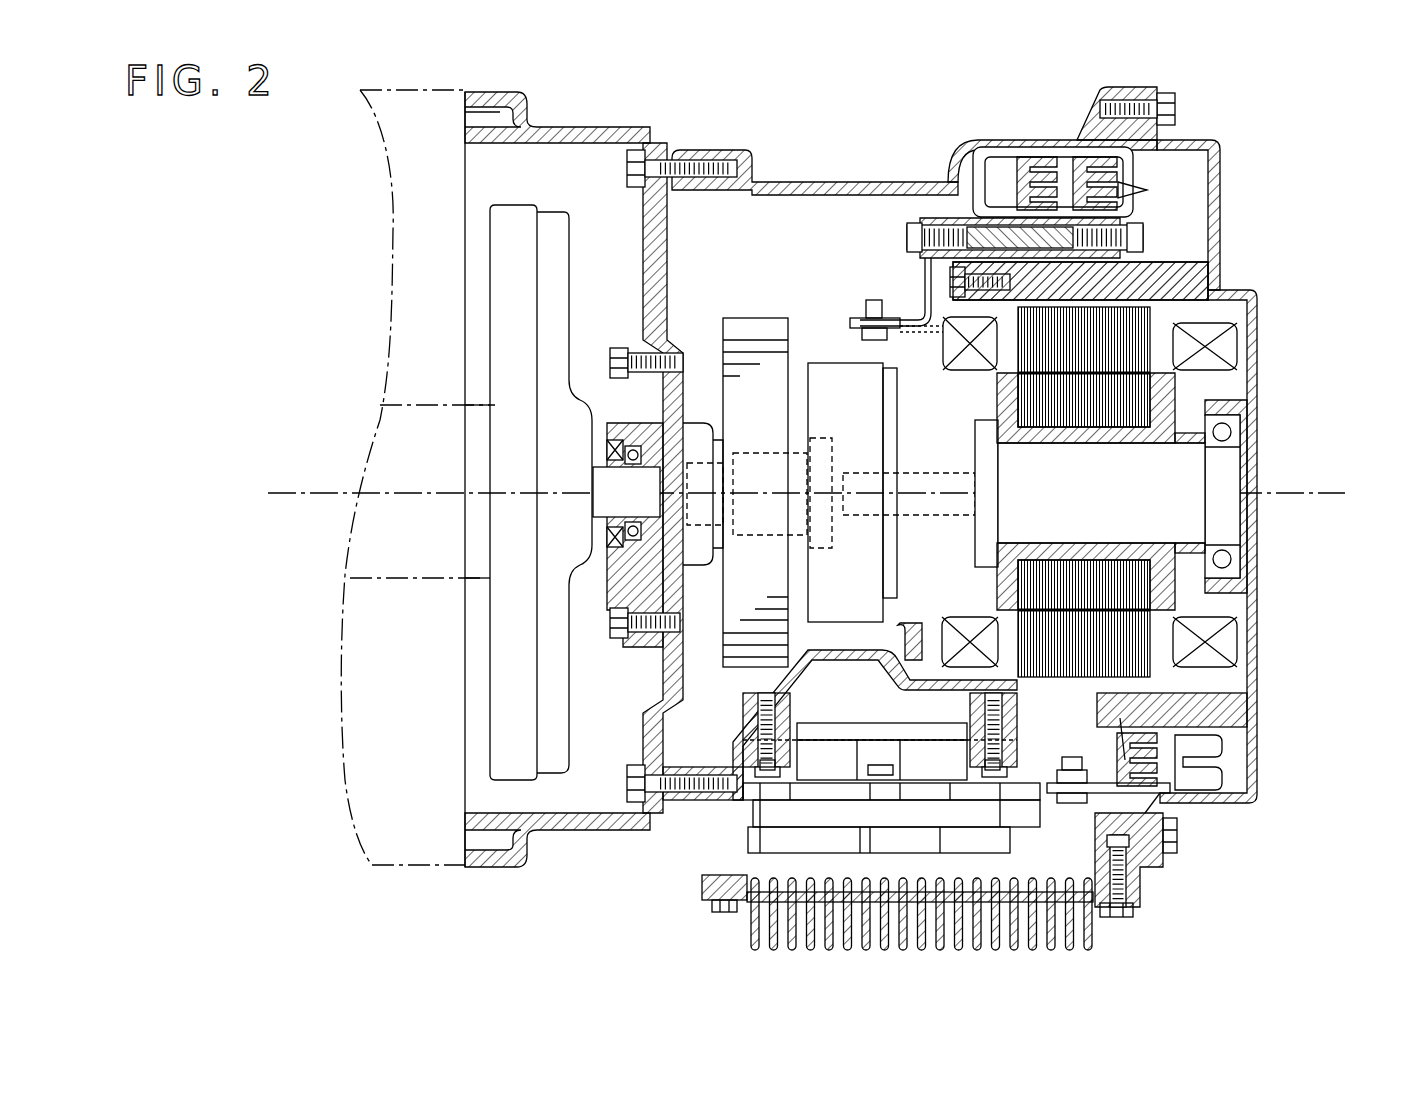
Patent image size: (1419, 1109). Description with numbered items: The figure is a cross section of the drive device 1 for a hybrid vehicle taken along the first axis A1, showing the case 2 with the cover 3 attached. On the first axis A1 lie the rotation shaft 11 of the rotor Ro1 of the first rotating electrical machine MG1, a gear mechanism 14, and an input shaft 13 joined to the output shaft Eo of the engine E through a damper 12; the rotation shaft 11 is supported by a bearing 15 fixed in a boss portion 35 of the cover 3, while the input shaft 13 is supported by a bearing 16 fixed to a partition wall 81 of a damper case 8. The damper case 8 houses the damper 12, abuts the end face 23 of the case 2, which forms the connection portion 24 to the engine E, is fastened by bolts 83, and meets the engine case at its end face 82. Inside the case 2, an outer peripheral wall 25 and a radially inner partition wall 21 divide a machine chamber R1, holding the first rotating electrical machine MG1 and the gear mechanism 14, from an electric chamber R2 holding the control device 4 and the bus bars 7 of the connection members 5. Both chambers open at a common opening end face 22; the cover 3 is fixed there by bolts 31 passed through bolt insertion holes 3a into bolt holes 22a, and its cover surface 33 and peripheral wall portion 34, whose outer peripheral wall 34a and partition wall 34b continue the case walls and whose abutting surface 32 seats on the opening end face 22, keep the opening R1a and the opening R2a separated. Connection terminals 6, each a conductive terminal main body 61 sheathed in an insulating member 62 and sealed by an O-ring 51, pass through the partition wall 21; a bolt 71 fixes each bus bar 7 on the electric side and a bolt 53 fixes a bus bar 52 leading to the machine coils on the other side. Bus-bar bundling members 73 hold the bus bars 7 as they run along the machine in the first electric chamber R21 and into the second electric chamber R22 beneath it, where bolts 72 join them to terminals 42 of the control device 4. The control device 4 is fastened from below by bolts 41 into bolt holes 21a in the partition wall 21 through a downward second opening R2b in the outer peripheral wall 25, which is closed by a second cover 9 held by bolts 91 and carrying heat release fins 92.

The drive device 1 is at (1312, 126).
The case 2 is at (908, 480).
The cover 3 is at (1182, 496).
The bolt insertion holes 3a is at (1176, 124).
The control device 4 is at (929, 778).
The connection members 5 is at (1060, 486).
The connection terminals 6 is at (1060, 486).
The bus bars 7 is at (1230, 840).
The damper case 8 is at (580, 125).
The second cover 9 is at (912, 887).
The rotation shaft 11 is at (1195, 475).
The damper 12 is at (570, 276).
The input shaft 13 is at (600, 480).
The gear mechanism 14 is at (760, 318).
The bearing 15 is at (1242, 410).
The bearing 16 is at (635, 497).
The partition wall 21 is at (946, 216).
The bolt holes 21a is at (760, 698).
The opening end face 22 is at (1215, 148).
The bolt holes 22a is at (1120, 110).
The end face 23 is at (815, 147).
The connection portion 24 is at (675, 158).
The outer peripheral wall 25 is at (780, 182).
The bolts 31 is at (1178, 107).
The abutting surface 32 is at (1135, 152).
The cover surface 33 is at (1220, 186).
The peripheral wall portion 34 is at (1182, 532).
The outer peripheral wall 34a is at (1240, 797).
The partition wall 34b is at (1190, 268).
The boss portion 35 is at (1250, 592).
The bolts 41 is at (760, 772).
The terminals 42 is at (1070, 758).
The O-ring 51 is at (962, 187).
The bus bar 52 is at (930, 283).
The bolt 53 is at (907, 237).
The terminal main body 61 is at (997, 188).
The insulating member 62 is at (947, 196).
The bolt 71 is at (1160, 238).
The bolts 72 is at (1075, 796).
The bus-bar bundling members 73 is at (1055, 165).
The partition wall 81 is at (668, 290).
The end face 82 is at (467, 135).
The bolts 83 is at (627, 168).
The bolts 91 is at (712, 908).
The heat release fins 92 is at (737, 905).
The first axis A1 is at (827, 495).
The engine E is at (415, 865).
The output shaft Eo is at (392, 405).
The first rotating electrical machine MG1 is at (1238, 362).
The rotor Ro1 is at (1003, 382).
The machine chamber R1 is at (770, 231).
The opening R1a is at (1178, 302).
The electric chamber R2 is at (877, 652).
The opening R2a is at (1163, 218).
The second opening R2b is at (935, 907).
The first electric chamber R21 is at (1007, 168).
The second electric chamber R22 is at (852, 507).